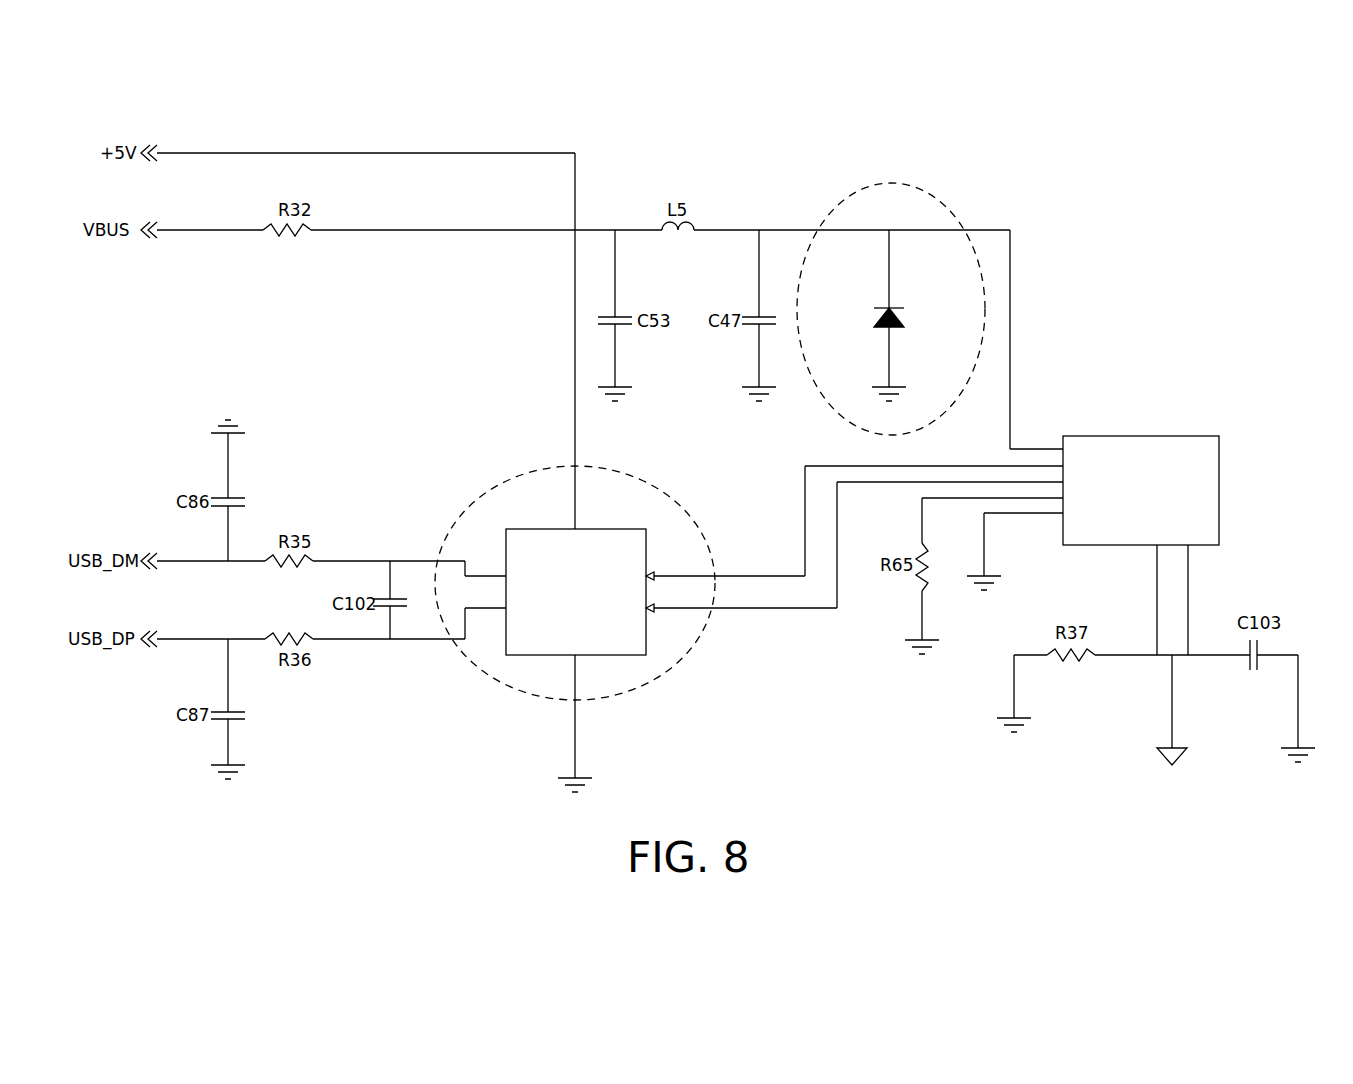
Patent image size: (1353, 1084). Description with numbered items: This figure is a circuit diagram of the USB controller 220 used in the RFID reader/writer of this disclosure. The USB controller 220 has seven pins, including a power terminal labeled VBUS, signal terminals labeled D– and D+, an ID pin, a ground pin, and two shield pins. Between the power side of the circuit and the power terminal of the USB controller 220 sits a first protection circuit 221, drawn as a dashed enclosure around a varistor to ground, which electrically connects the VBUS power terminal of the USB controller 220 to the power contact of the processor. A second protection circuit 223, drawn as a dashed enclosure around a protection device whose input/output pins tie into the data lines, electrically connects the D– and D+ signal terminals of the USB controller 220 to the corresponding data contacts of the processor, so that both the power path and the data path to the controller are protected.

The USB controller 220 is at (1145, 384).
The first protection circuit 221 is at (930, 197).
The second protection circuit 223 is at (681, 660).